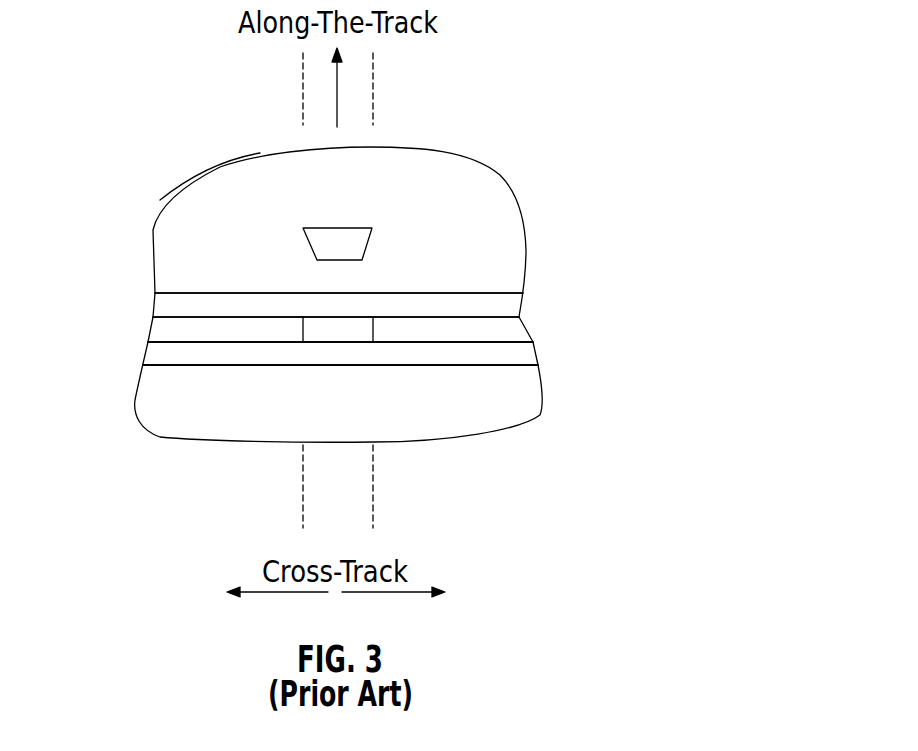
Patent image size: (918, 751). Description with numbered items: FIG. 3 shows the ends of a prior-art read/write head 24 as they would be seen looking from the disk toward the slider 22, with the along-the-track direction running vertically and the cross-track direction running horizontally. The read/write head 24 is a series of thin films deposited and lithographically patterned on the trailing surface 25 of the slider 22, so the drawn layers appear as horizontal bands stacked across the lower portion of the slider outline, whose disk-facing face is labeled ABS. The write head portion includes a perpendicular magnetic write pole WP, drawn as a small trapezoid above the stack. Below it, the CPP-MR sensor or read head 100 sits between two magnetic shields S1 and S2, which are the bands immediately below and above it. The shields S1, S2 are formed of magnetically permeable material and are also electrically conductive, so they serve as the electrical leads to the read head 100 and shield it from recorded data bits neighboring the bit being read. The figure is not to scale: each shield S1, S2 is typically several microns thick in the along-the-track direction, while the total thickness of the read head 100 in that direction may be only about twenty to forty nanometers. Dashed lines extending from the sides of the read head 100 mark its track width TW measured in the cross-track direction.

The slider 22 is at (170, 428).
The read/write head 24 is at (92, 225).
The trailing surface 25 is at (150, 365).
The read head 100 is at (362, 333).
The first magnetic shield S1 is at (227, 362).
The second magnetic shield S2 is at (513, 303).
The write pole WP is at (367, 245).
The air bearing surface ABS is at (216, 186).
The track width TW is at (383, 520).